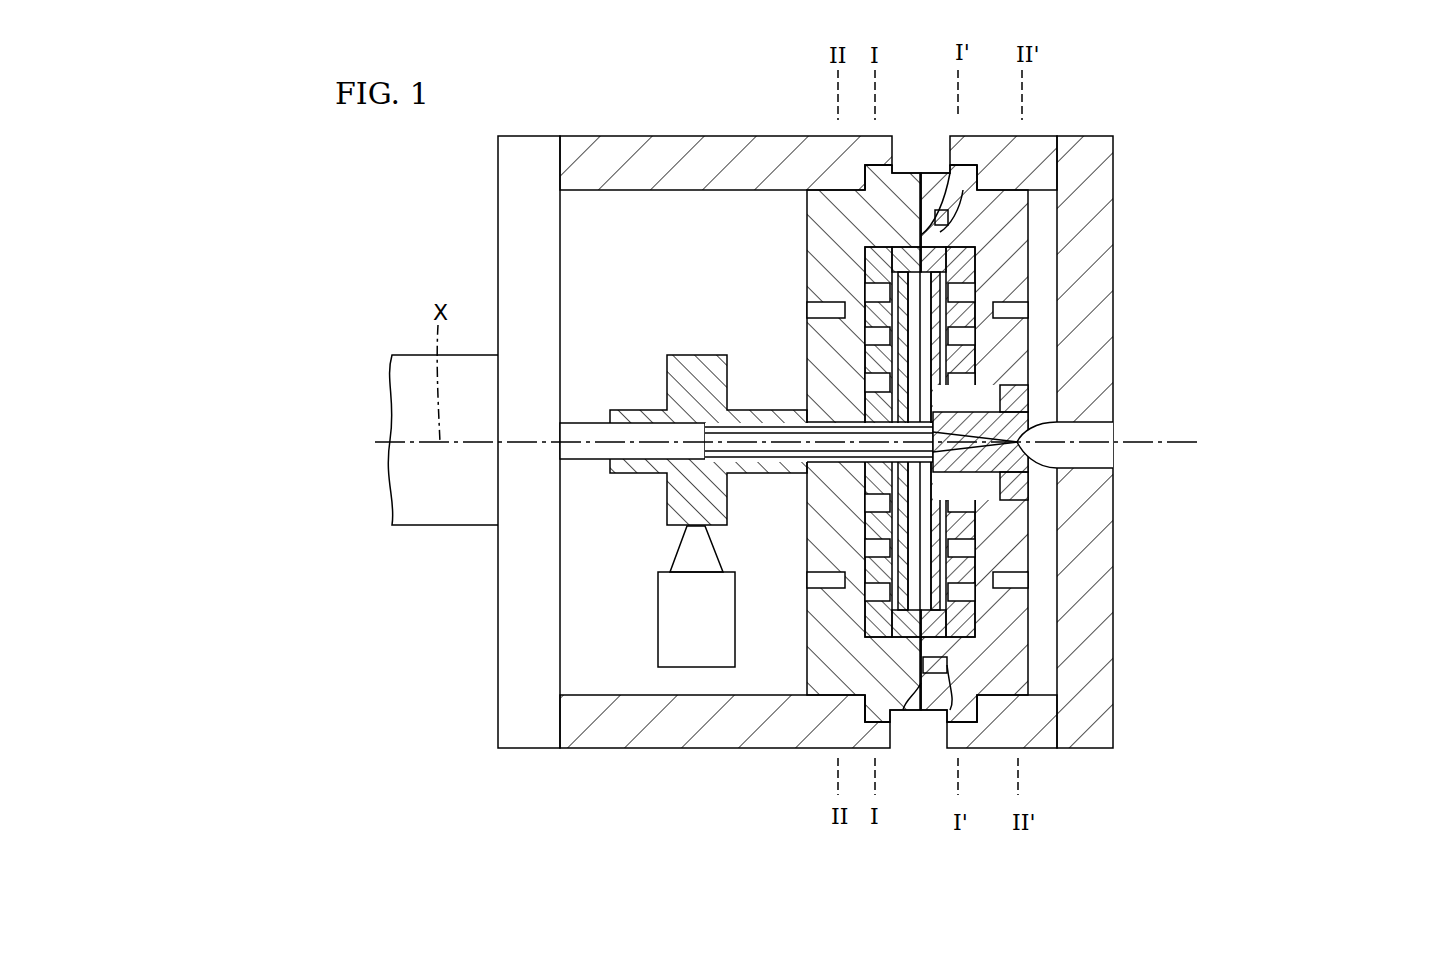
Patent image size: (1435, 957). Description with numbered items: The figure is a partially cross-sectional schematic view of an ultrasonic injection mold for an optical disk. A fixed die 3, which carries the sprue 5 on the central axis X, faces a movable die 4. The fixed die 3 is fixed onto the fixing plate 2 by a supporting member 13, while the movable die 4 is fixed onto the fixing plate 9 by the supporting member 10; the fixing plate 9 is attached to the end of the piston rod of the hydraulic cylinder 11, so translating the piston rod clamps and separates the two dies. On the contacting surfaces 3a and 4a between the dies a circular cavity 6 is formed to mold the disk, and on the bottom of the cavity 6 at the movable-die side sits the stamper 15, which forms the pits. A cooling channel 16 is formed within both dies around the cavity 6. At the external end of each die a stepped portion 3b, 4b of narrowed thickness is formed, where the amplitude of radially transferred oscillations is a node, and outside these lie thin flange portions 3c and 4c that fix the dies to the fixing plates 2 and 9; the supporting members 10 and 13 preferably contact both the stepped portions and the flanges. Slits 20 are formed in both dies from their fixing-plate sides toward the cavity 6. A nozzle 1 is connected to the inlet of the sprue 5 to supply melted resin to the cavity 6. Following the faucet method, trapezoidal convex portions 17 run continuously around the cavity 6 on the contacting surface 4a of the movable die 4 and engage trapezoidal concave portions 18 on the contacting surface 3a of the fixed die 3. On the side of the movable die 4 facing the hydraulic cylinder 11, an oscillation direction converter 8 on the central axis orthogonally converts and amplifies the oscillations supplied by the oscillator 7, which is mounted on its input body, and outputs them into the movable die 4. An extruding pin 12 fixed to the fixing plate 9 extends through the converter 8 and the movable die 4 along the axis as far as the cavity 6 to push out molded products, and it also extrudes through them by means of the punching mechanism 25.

The nozzle 1 is at (1103, 455).
The fixing plate 2 is at (1102, 615).
The fixed die 3 is at (1013, 268).
The contacting surface 3a is at (972, 137).
The stepped portion 3b is at (1000, 137).
The flange portion 3c is at (947, 137).
The movable die 4 is at (820, 208).
The contacting surface 4a is at (903, 710).
The stepped portion 4b is at (863, 175).
The flange portion 4c is at (903, 137).
The sprue 5 is at (1010, 402).
The cavity 6 is at (937, 282).
The oscillator 7 is at (675, 648).
The oscillation direction converter 8 is at (712, 503).
The fixing plate 9 is at (517, 672).
The supporting member 10 is at (762, 723).
The hydraulic cylinder 11 is at (400, 385).
The extruding pin 12 is at (775, 438).
The supporting member 13 is at (1048, 745).
The stamper 15 is at (900, 275).
The cooling channel 16 is at (873, 590).
The convex portions 17 is at (1027, 137).
The concave portions 18 is at (940, 672).
The slits 20 is at (810, 310).
The punching mechanism 25 is at (596, 455).